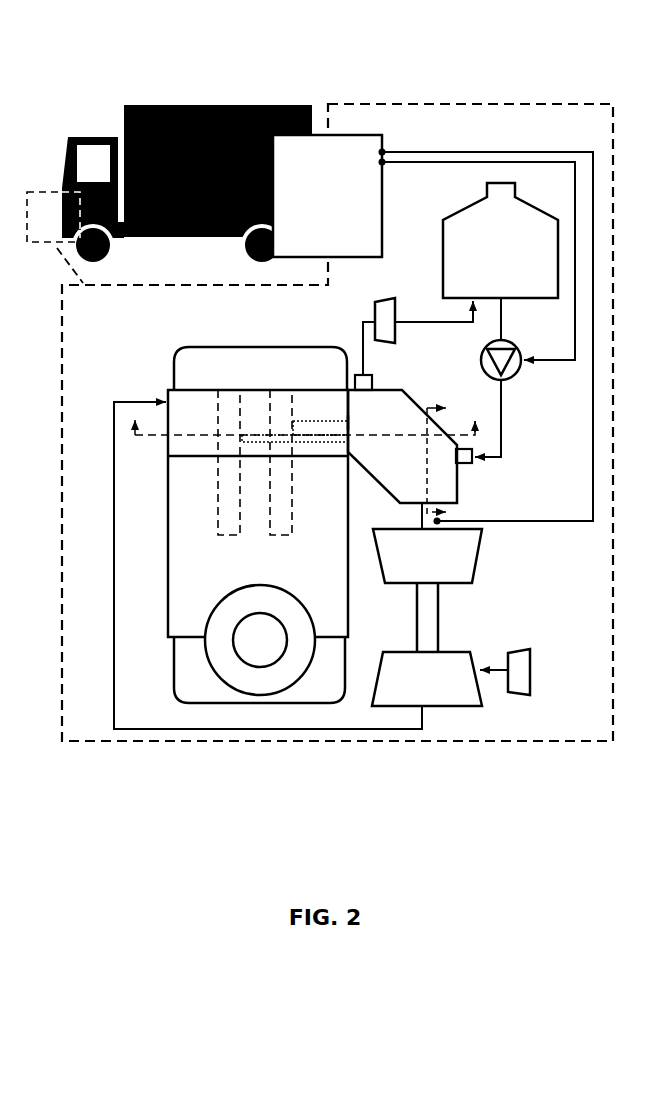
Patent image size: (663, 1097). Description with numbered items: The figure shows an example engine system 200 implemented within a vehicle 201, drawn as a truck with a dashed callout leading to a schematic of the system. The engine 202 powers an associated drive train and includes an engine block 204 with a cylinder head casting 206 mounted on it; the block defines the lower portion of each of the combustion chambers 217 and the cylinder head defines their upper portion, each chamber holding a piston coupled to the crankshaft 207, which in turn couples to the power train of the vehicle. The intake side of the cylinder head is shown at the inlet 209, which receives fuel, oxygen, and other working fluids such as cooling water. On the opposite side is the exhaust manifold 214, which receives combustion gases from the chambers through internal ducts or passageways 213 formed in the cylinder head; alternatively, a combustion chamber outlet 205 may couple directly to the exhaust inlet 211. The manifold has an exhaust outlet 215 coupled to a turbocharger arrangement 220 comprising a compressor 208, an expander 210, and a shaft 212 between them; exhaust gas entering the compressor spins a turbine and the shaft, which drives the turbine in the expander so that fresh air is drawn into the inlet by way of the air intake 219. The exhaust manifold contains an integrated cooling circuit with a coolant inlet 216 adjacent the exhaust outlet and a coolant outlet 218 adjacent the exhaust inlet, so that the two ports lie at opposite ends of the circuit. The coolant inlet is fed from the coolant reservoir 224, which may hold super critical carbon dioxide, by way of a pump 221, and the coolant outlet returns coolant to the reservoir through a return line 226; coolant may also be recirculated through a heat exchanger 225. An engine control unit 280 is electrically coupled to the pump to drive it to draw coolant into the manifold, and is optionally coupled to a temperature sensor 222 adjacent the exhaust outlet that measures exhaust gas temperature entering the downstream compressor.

The engine system 200 is at (110, 58).
The vehicle 201 is at (190, 104).
The engine 202 is at (162, 350).
The engine block 204 is at (168, 602).
The combustion chamber outlet 205 is at (291, 422).
The cylinder head casting 206 is at (243, 346).
The crankshaft 207 is at (246, 602).
The compressor 208 is at (427, 556).
The inlet 209 is at (164, 389).
The expander 210 is at (427, 679).
The exhaust inlet 211 is at (352, 423).
The shaft 212 is at (416, 627).
The internal ducts/passageways 213 is at (317, 414).
The exhaust manifold 214 is at (305, 449).
The exhaust outlet 215 is at (418, 512).
The coolant inlet 216 is at (481, 471).
The combustion chambers 217 is at (206, 503).
The coolant outlet 218 is at (378, 371).
The air intake 219 is at (533, 701).
The turbocharger arrangement 220 is at (471, 637).
The pump 221 is at (519, 386).
The temperature sensor 222 is at (441, 524).
The coolant reservoir 224 is at (500, 240).
The heat exchanger 225 is at (372, 307).
The return line 226 is at (411, 317).
The engine control unit 280 is at (433, 328).